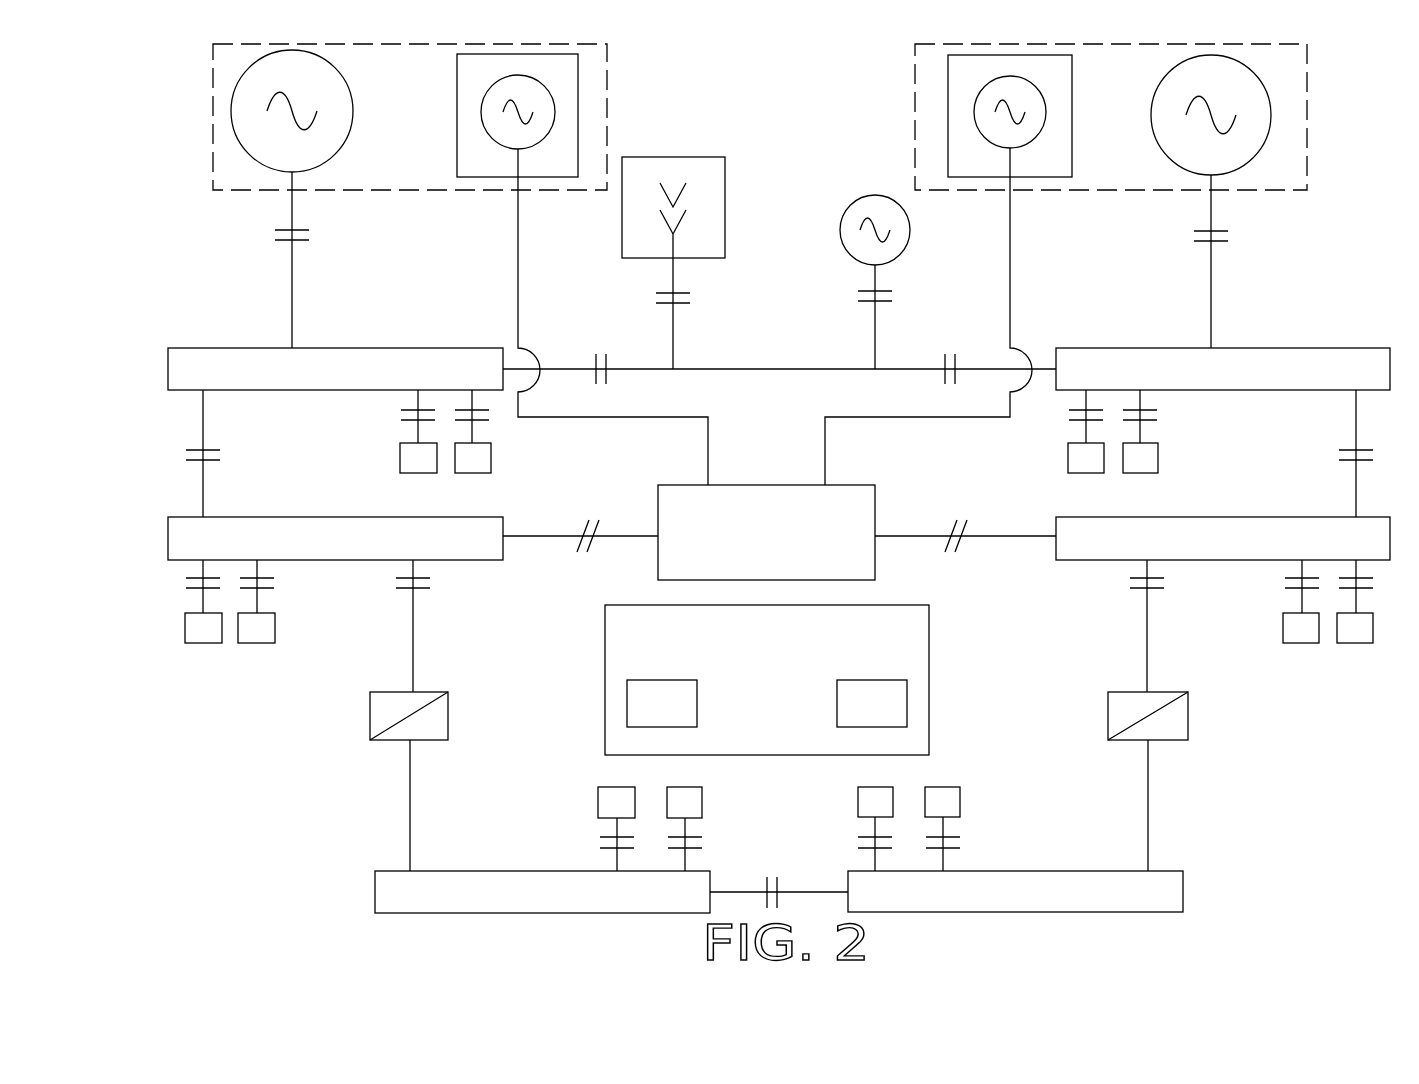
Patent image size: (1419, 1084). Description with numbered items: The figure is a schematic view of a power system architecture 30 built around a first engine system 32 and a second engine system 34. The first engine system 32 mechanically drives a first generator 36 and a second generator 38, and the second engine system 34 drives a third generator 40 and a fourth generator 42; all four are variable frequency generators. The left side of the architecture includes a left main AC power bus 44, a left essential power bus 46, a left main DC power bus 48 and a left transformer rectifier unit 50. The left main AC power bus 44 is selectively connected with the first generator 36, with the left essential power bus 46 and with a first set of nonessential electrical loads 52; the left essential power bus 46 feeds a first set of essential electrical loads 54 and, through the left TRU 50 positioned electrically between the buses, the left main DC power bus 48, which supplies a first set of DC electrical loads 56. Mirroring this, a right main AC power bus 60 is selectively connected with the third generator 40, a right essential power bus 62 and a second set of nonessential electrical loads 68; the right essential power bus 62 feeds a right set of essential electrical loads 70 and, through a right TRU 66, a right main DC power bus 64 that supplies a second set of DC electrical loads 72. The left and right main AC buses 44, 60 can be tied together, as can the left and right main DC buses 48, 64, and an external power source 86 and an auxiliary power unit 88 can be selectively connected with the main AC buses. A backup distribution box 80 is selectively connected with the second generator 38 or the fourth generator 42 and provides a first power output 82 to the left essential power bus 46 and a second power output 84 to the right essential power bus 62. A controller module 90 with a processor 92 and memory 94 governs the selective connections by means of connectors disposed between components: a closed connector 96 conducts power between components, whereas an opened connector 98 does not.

The power system architecture 30 is at (771, 87).
The first engine system 32 is at (210, 95).
The second engine system 34 is at (1318, 95).
The first generator 36 is at (345, 80).
The second generator 38 is at (457, 143).
The third generator 40 is at (1253, 80).
The fourth generator 42 is at (1072, 82).
The left main AC power bus 44 is at (200, 347).
The left essential power bus 46 is at (190, 516).
The left main DC power bus 48 is at (397, 870).
The left transformer rectifier unit 50 is at (425, 692).
The first set of nonessential electrical loads 52 is at (472, 474).
The first set of essential electrical loads 54 is at (257, 644).
The first set of DC electrical loads 56 is at (685, 787).
The right main AC power bus 60 is at (1312, 347).
The right essential power bus 62 is at (1297, 517).
The right main DC power bus 64 is at (1160, 870).
The right transformer rectifier unit 66 is at (1108, 710).
The second set of nonessential electrical loads 68 is at (1140, 474).
The right set of essential electrical loads 70 is at (1302, 644).
The second set of DC electrical loads 72 is at (943, 787).
The backup distribution box 80 is at (722, 485).
The first power output 82 is at (650, 510).
The second power output 84 is at (884, 516).
The external power source 86 is at (673, 157).
The auxiliary power unit 88 is at (862, 203).
The controller module 90 is at (748, 715).
The processor 92 is at (645, 715).
The memory 94 is at (855, 715).
The closed state connector 96 is at (270, 238).
The opened state connector 98 is at (578, 518).